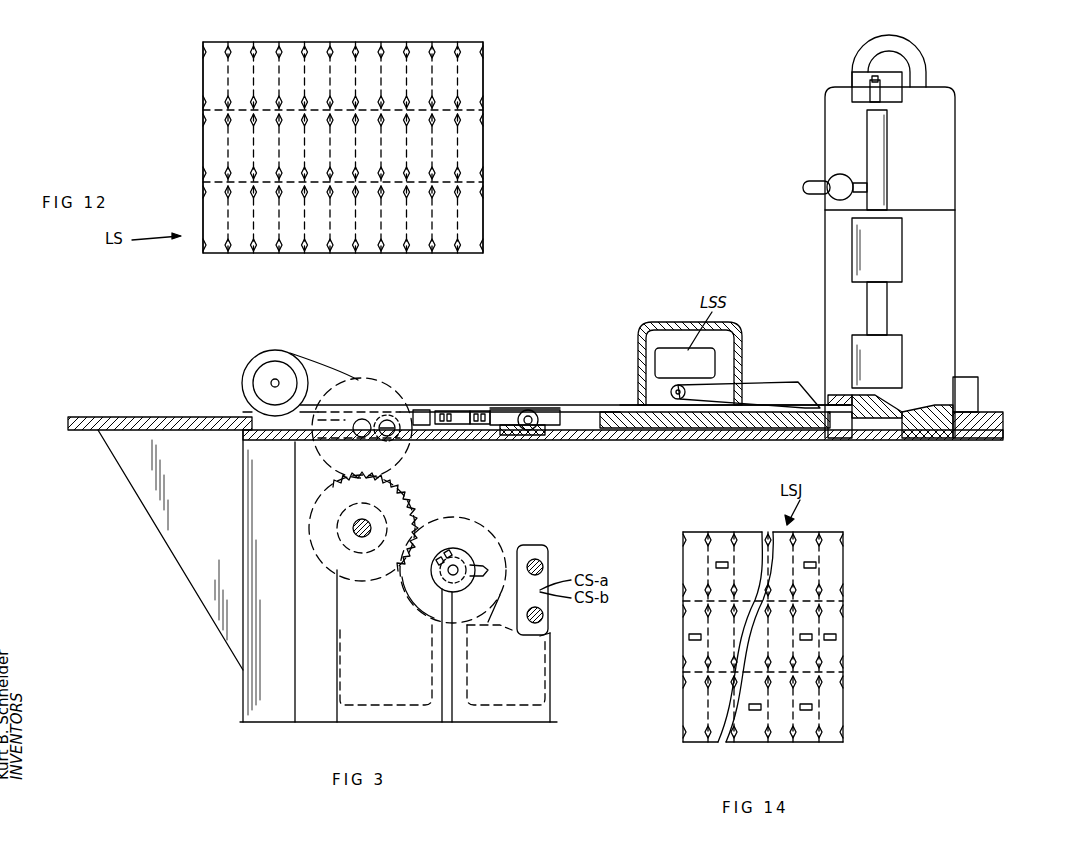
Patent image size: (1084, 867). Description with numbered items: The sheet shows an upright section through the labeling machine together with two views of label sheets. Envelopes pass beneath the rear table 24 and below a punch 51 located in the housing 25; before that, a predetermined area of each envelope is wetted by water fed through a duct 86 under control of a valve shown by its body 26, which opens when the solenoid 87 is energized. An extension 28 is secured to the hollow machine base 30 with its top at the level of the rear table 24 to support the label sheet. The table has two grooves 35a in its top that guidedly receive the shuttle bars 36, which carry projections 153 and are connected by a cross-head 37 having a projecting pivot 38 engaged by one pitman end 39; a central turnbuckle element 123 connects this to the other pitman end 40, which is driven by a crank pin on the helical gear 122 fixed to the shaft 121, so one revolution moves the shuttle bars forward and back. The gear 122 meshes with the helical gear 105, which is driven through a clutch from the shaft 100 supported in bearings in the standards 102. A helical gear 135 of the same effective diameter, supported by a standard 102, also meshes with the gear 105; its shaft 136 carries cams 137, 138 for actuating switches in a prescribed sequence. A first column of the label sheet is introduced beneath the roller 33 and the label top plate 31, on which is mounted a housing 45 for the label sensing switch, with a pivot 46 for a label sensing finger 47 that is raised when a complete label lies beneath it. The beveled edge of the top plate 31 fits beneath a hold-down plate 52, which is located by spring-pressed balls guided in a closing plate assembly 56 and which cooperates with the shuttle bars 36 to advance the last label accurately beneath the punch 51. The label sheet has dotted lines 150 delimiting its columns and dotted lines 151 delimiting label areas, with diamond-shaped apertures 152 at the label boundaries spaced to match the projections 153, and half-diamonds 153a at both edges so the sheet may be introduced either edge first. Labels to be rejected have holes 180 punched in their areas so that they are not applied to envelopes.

In FIG. 12, the dotted lines 150 is at (440, 180).
In FIG. 12, the dotted lines 151 is at (279, 215).
In FIG. 14, the dotted lines 151 is at (700, 670).
In FIG. 12, the apertures 152 is at (432, 240).
In FIG. 14, the apertures 152 is at (795, 540).
In FIG. 12, the half-diamonds 153a is at (203, 102).
In FIG. 14, the half-diamonds 153a is at (683, 540).
In FIG. 14, the holes 180 is at (722, 561).
In FIG. 3, the extension 28 is at (168, 417).
In FIG. 3, the machine base 30 is at (256, 508).
In FIG. 3, the rear table 24 is at (248, 436).
In FIG. 3, the roller 33 is at (280, 350).
In FIG. 3, the grooves 35a is at (265, 408).
In FIG. 3, the helical gear 122 is at (368, 378).
In FIG. 3, the shaft 121 is at (366, 420).
In FIG. 3, the pitman end 40 is at (418, 410).
In FIG. 3, the label top plate 31 is at (455, 410).
In FIG. 3, the turnbuckle element 123 is at (462, 424).
In FIG. 3, the pitman end 39 is at (515, 410).
In FIG. 3, the pivot 38 is at (535, 412).
In FIG. 3, the cross-head 37 is at (540, 436).
In FIG. 3, the helical gear 105 is at (390, 488).
In FIG. 3, the shaft 100 is at (352, 530).
In FIG. 3, the helical gear 135 is at (470, 530).
In FIG. 3, the cam 138 is at (447, 548).
In FIG. 3, the shaft 136 is at (458, 560).
In FIG. 3, the cam 137 is at (455, 575).
In FIG. 3, the standard 102 is at (548, 668).
In FIG. 3, the housing 45 is at (742, 334).
In FIG. 3, the projections 153 is at (640, 420).
In FIG. 3, the pivot 46 is at (670, 388).
In FIG. 3, the label sensing finger 47 is at (750, 384).
In FIG. 3, the shuttle bars 36 is at (730, 430).
In FIG. 3, the closing plate assembly 56 is at (840, 395).
In FIG. 3, the hold-down plate 52 is at (838, 440).
In FIG. 3, the punch 51 is at (880, 410).
In FIG. 3, the housing 25 is at (945, 228).
In FIG. 3, the valve body 26 is at (880, 160).
In FIG. 3, the solenoid 87 is at (955, 102).
In FIG. 3, the duct 86 is at (805, 185).